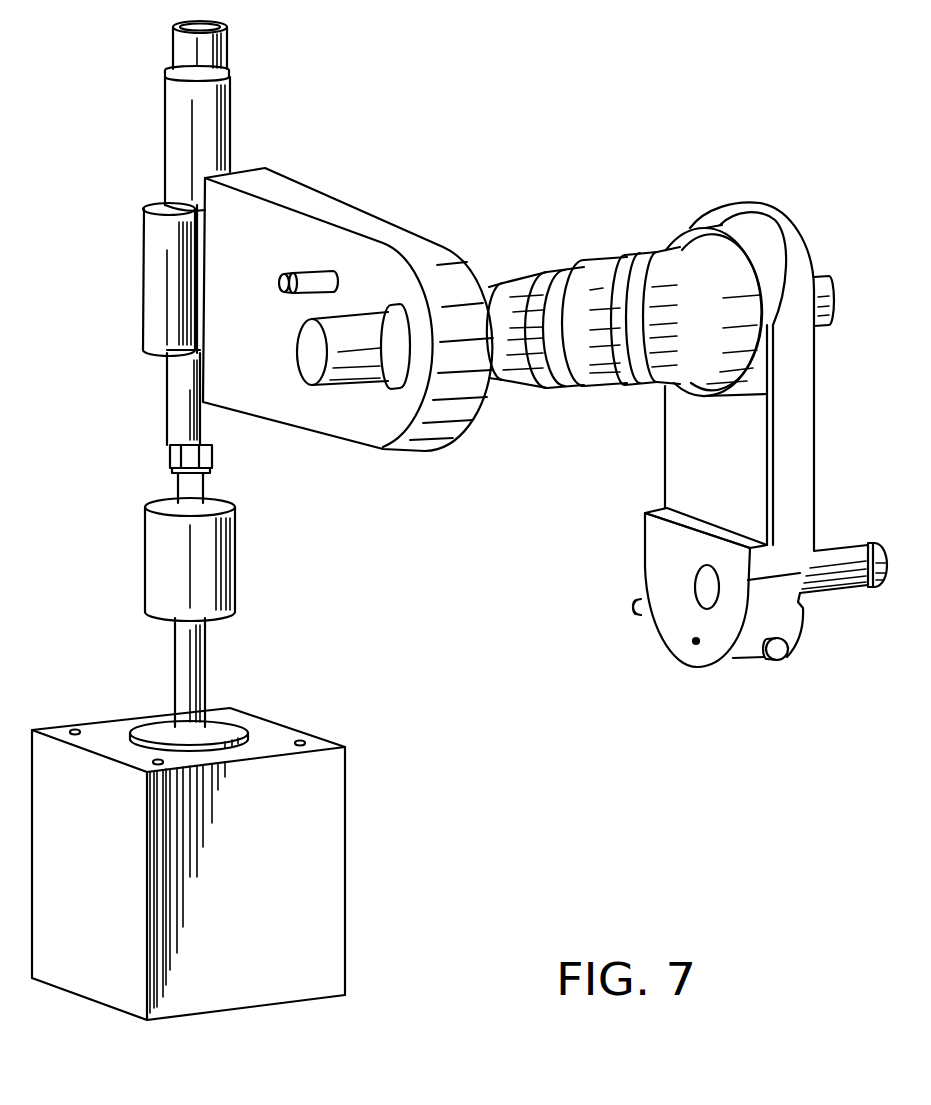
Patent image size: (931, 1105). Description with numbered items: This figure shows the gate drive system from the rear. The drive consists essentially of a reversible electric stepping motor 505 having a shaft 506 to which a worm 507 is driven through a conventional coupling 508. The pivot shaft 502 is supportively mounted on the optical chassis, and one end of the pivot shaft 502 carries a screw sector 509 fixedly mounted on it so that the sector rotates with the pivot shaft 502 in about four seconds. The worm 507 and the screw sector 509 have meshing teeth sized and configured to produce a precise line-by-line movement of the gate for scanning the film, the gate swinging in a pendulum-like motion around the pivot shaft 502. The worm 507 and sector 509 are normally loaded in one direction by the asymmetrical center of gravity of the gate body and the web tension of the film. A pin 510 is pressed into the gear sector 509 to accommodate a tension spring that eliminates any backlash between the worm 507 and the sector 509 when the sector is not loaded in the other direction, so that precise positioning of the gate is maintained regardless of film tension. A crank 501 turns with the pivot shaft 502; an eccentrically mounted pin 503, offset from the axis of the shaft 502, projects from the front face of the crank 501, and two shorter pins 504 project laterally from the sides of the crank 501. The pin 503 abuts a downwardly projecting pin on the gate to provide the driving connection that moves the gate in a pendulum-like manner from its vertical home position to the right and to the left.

The crank 501 is at (702, 657).
The pivot shaft 502 is at (584, 272).
The eccentrically mounted pin 503 is at (850, 570).
The shorter pins 504 is at (638, 606).
The reversible electric stepping motor 505 is at (257, 895).
The shaft 506 is at (187, 673).
The worm 507 is at (153, 328).
The coupling 508 is at (236, 590).
The screw sector 509 is at (367, 430).
The pin 510 is at (327, 268).